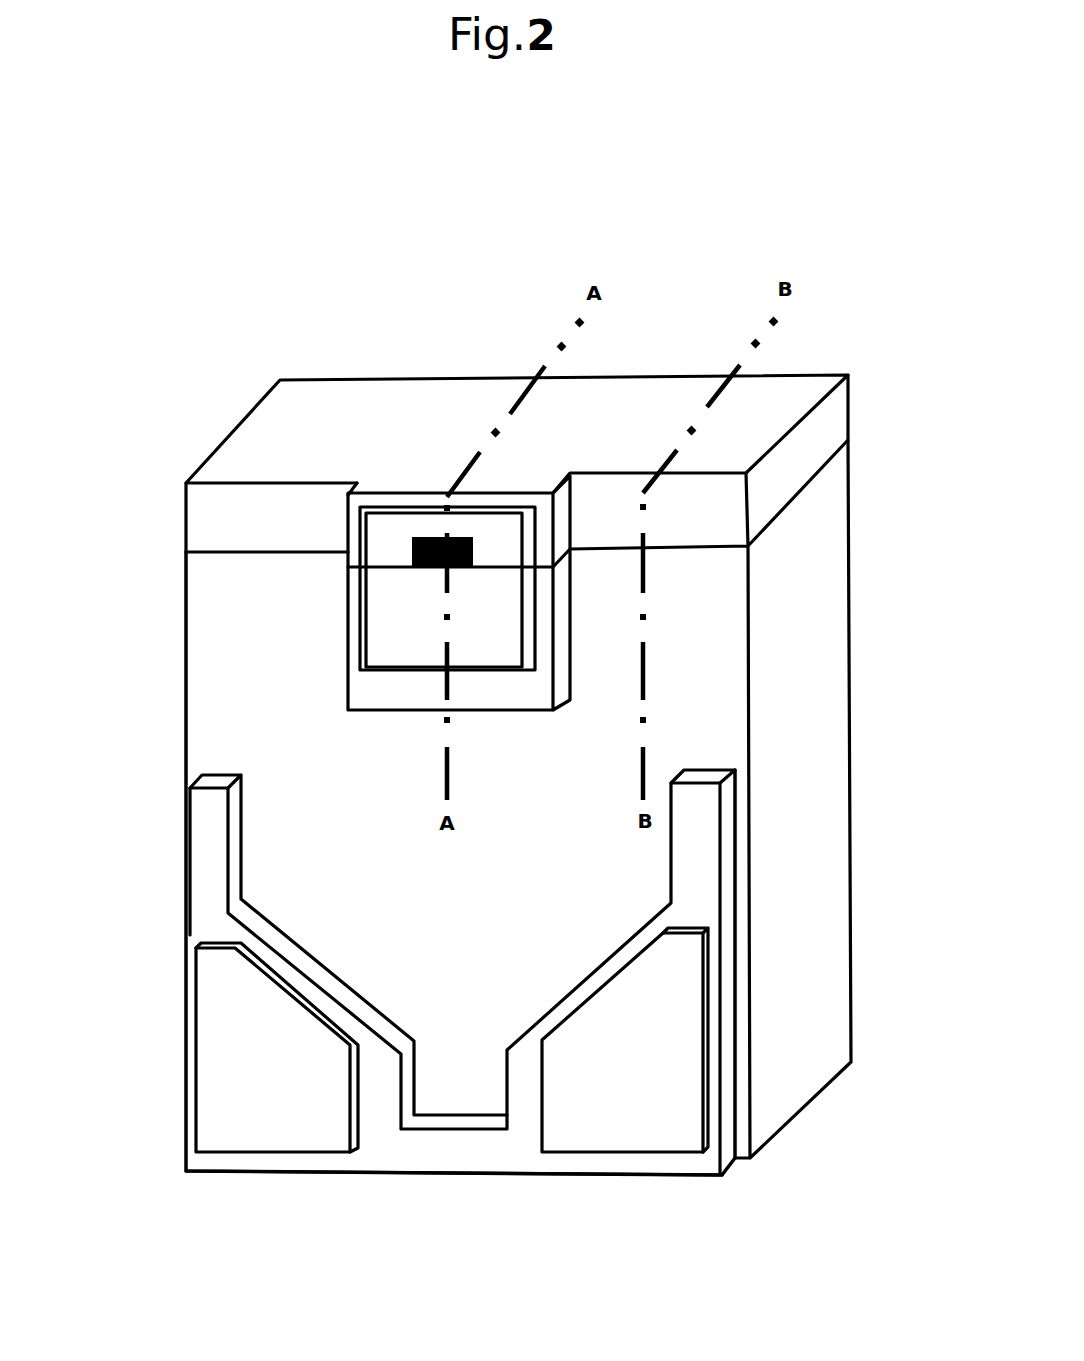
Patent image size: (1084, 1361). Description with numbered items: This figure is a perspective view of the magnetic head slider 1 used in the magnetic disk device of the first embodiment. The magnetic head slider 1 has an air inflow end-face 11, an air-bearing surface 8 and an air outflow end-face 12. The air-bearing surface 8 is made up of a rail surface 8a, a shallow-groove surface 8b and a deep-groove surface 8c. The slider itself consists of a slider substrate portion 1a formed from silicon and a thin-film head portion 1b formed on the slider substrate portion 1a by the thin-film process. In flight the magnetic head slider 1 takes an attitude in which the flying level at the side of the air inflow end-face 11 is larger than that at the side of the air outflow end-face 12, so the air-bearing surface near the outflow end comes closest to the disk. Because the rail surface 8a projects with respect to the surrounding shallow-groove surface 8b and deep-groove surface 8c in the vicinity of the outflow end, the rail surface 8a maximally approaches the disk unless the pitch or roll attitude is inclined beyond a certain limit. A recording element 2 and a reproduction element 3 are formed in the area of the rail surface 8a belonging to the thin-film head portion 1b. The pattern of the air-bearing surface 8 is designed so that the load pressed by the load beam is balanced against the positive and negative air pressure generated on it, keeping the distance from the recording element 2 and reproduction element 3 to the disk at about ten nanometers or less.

The magnetic head slider 1 is at (830, 295).
The slider substrate portion 1a is at (810, 542).
The thin-film head portion 1b is at (802, 455).
The recording element 2 is at (440, 532).
The reproduction element 3 is at (457, 533).
The air-bearing surface 8 is at (237, 257).
The rail surface 8a is at (400, 632).
The shallow-groove surface 8b is at (372, 690).
The deep-groove surface 8c is at (233, 735).
The air inflow end-face 11 is at (400, 1180).
The air outflow end-face 12 is at (667, 423).